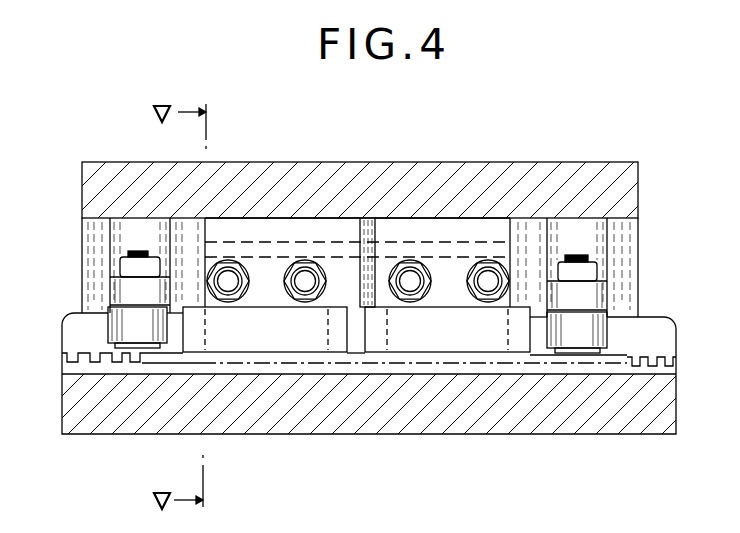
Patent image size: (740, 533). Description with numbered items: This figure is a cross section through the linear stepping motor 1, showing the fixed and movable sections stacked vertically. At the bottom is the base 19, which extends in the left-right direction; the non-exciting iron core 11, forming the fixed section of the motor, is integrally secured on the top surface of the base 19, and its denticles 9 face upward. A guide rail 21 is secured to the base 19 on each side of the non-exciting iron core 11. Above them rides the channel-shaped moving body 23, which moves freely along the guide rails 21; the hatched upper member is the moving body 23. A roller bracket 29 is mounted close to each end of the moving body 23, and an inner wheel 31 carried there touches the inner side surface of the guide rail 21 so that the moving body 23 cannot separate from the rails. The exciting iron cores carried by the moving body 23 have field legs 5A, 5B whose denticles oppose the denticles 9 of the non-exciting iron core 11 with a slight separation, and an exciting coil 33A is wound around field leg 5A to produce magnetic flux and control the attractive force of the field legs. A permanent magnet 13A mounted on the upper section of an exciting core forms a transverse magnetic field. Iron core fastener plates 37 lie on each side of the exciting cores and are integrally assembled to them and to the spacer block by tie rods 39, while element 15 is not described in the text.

The linear stepping motor 1 is at (648, 180).
The moving body 23 is at (533, 178).
The housing cavity 15 is at (248, 226).
The permanent magnet 13A is at (322, 256).
The tie rod 39 is at (511, 258).
The iron core fastener plate 37 is at (449, 266).
The roller bracket 29 is at (140, 235).
The inner wheel 31 is at (108, 313).
The guide rail 21 is at (58, 337).
The non-exciting iron core 11 is at (610, 373).
The denticles 9 is at (127, 353).
The exciting coil 33A is at (385, 353).
The field leg 5A is at (203, 325).
The field leg 5B is at (517, 325).
The base 19 is at (603, 425).